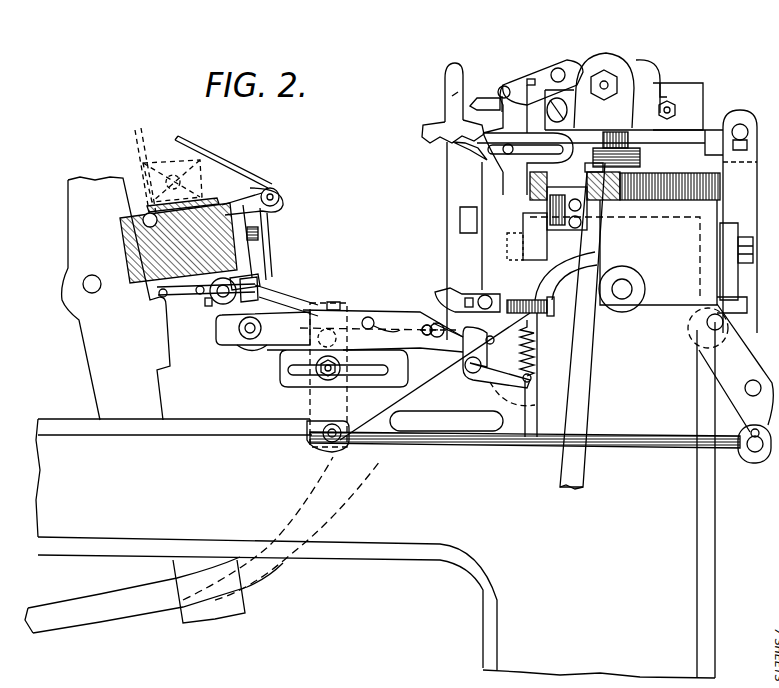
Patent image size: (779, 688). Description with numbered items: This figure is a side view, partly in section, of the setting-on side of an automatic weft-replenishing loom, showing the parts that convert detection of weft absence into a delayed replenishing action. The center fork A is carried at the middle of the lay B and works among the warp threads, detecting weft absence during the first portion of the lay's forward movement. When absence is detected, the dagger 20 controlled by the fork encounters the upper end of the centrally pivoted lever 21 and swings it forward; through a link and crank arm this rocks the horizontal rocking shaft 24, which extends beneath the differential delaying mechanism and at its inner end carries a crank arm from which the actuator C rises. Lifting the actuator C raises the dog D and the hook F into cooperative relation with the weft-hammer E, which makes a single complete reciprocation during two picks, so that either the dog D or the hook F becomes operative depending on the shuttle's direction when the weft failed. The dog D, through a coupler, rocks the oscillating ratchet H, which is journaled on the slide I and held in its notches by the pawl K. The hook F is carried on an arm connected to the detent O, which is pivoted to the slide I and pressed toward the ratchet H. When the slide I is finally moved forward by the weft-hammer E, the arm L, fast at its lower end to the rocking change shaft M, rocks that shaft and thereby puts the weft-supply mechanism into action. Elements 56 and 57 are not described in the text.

The center fork A is at (215, 160).
The lay B is at (140, 245).
The actuator C is at (497, 183).
The dog D is at (465, 155).
The weft-hammer E is at (467, 230).
The hook F is at (478, 98).
The oscillating ratchet H is at (613, 65).
The slide I is at (707, 137).
The pawl K is at (643, 68).
The arm L is at (740, 197).
The change shaft M is at (718, 320).
The detent O is at (572, 62).
The dagger 20 is at (258, 287).
The centrally pivoted lever 21 is at (315, 325).
The rocking shaft 24 is at (475, 298).
The rod 56 is at (647, 450).
The link 57 is at (737, 367).